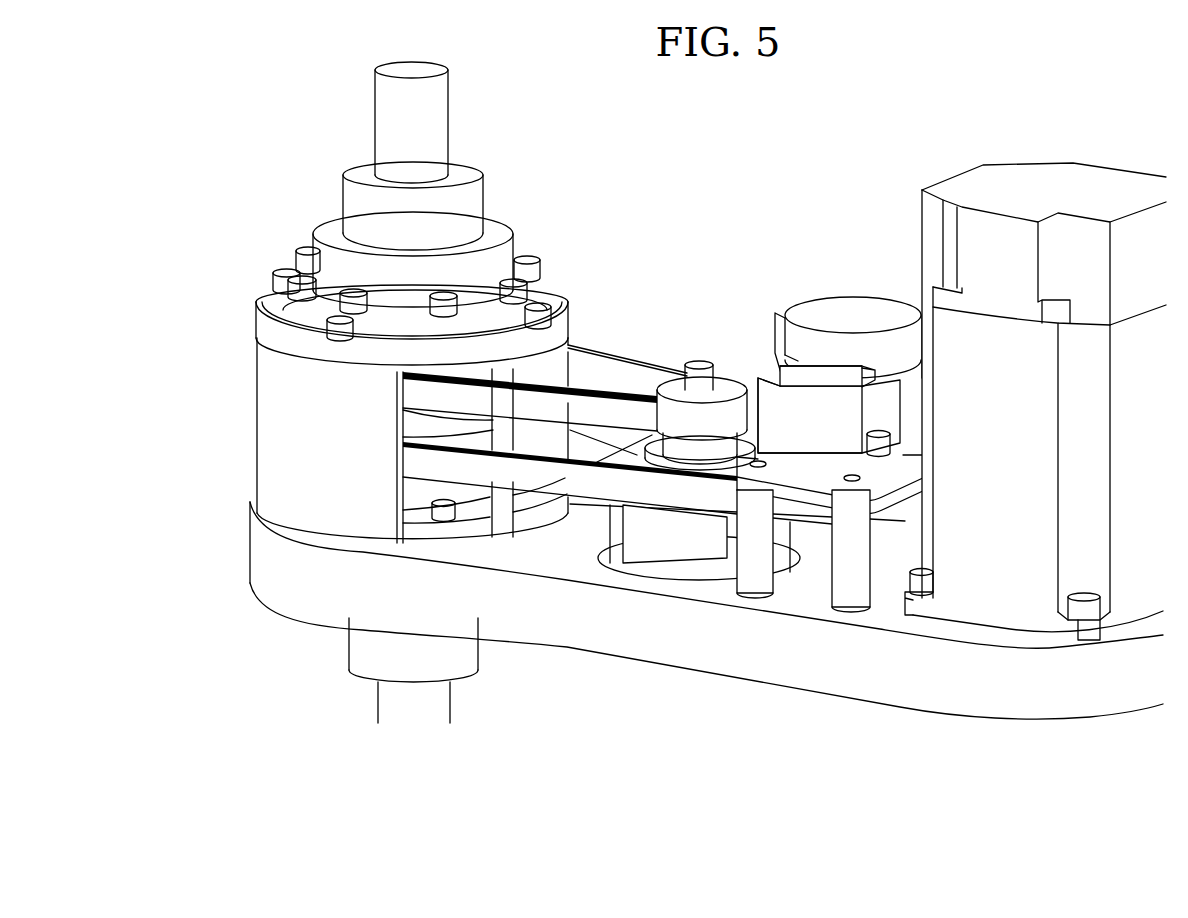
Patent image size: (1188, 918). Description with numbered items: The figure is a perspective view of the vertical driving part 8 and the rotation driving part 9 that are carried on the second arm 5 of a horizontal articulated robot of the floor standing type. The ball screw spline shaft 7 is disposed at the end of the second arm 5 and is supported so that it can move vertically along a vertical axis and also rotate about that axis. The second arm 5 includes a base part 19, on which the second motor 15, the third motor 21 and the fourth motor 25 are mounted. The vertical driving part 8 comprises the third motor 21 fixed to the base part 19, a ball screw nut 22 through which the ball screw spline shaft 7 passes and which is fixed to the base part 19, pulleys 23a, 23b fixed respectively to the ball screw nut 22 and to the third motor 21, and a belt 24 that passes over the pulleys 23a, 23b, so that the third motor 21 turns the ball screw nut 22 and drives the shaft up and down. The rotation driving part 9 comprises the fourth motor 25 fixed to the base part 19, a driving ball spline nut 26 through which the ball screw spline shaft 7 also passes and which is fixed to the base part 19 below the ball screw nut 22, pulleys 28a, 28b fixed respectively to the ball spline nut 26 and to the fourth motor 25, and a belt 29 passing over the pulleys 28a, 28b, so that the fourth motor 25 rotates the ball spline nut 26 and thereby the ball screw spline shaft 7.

The second arm 5 is at (792, 702).
The ball screw spline shaft 7 is at (393, 103).
The vertical driving part 8 is at (490, 162).
The rotation driving part 9 is at (482, 680).
The second motor 15 is at (985, 575).
The base part 19 is at (733, 652).
The third motor 21 is at (667, 540).
The ball screw nut 22 is at (352, 193).
The pulley 23a is at (517, 377).
The pulley 23b is at (723, 383).
The belt 24 is at (622, 377).
The fourth motor 25 is at (853, 313).
The ball spline nut 26 is at (362, 647).
The pulley 28a is at (477, 440).
The pulley 28b is at (922, 477).
The belt 29 is at (592, 482).